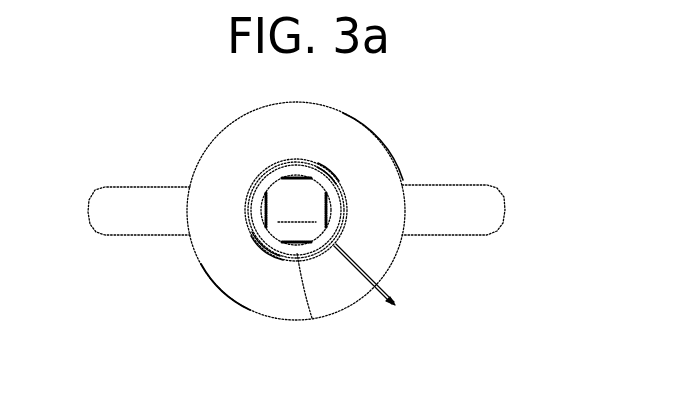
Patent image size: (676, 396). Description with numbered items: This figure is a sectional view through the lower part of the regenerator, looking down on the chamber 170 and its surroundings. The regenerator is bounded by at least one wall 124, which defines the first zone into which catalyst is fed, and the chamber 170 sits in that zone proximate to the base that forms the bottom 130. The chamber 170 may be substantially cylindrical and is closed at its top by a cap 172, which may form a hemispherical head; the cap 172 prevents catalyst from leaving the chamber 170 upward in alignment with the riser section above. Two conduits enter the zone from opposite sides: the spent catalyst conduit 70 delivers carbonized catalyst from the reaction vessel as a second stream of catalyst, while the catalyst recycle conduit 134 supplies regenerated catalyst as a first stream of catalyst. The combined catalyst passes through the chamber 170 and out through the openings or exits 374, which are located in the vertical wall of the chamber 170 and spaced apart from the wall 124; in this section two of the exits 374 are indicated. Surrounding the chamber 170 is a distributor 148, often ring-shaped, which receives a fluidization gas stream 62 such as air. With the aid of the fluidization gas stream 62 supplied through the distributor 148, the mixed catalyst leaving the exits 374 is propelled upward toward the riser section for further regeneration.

The bottom 130 is at (238, 148).
The wall 124 is at (236, 304).
The catalyst recycle conduit 134 is at (133, 198).
The spent catalyst conduit 70 is at (468, 182).
The distributor 148 is at (248, 233).
The chamber 170 is at (322, 192).
The cap 172 is at (296, 208).
The openings or exits 374 is at (312, 320).
The fluidization gas stream 62 is at (395, 306).